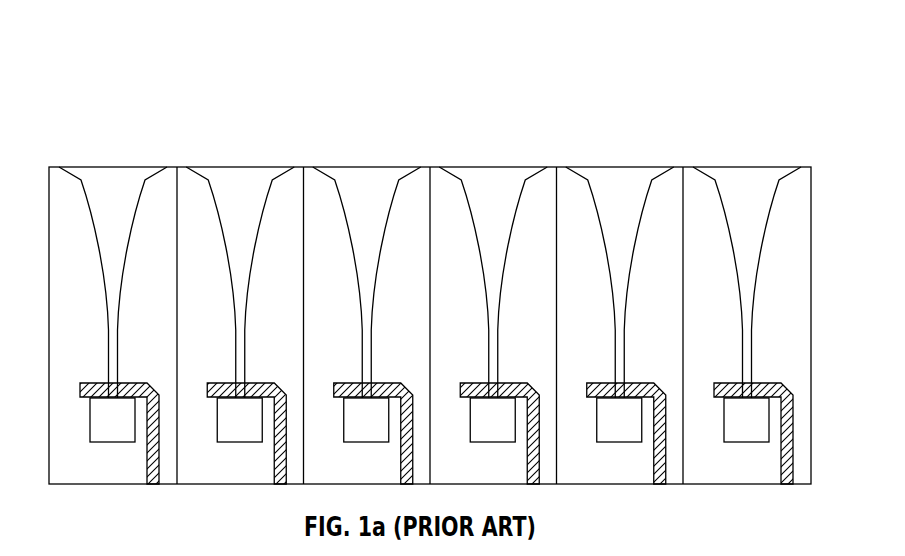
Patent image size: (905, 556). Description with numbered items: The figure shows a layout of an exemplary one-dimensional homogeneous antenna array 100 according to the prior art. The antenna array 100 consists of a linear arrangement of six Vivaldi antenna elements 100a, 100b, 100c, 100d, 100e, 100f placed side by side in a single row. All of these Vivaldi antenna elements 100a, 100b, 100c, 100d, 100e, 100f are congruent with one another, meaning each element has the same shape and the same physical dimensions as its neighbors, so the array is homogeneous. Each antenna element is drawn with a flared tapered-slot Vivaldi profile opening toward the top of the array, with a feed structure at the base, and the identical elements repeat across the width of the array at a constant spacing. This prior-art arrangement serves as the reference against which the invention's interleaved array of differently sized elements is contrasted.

The antenna array 100 is at (102, 60).
The Vivaldi antenna element 100a is at (51, 152).
The Vivaldi antenna element 100b is at (179, 152).
The Vivaldi antenna element 100c is at (306, 152).
The Vivaldi antenna element 100d is at (432, 152).
The Vivaldi antenna element 100e is at (558, 152).
The Vivaldi antenna element 100f is at (685, 152).